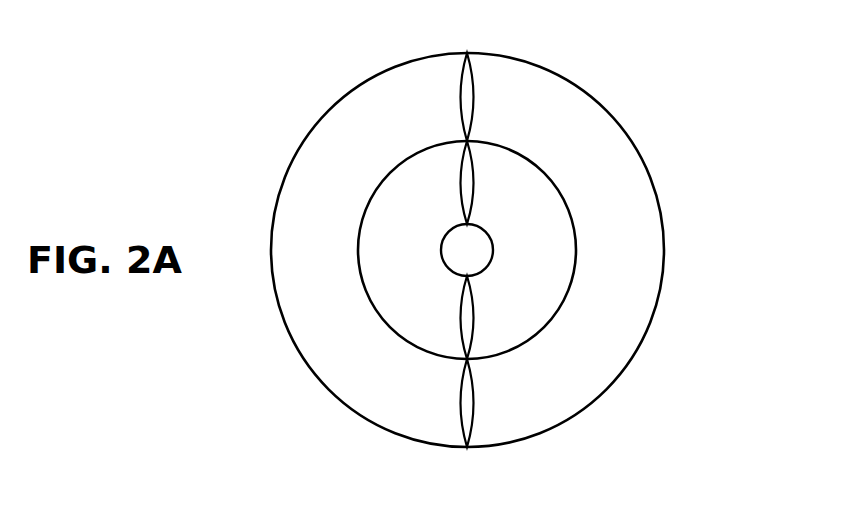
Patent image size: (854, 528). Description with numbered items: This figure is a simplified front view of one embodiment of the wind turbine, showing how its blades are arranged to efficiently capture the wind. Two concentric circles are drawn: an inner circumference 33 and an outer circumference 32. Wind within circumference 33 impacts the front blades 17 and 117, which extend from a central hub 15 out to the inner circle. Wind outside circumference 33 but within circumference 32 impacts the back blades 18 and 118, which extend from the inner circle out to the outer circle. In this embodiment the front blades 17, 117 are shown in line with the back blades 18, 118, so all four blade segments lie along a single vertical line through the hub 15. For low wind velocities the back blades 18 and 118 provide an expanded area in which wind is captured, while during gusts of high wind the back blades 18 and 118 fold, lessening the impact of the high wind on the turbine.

The circumference 32 is at (663, 204).
The circumference 33 is at (579, 267).
The hub 15 is at (443, 237).
The front blade 17 is at (461, 315).
The front blade 117 is at (462, 171).
The back blade 18 is at (475, 423).
The back blade 118 is at (478, 70).